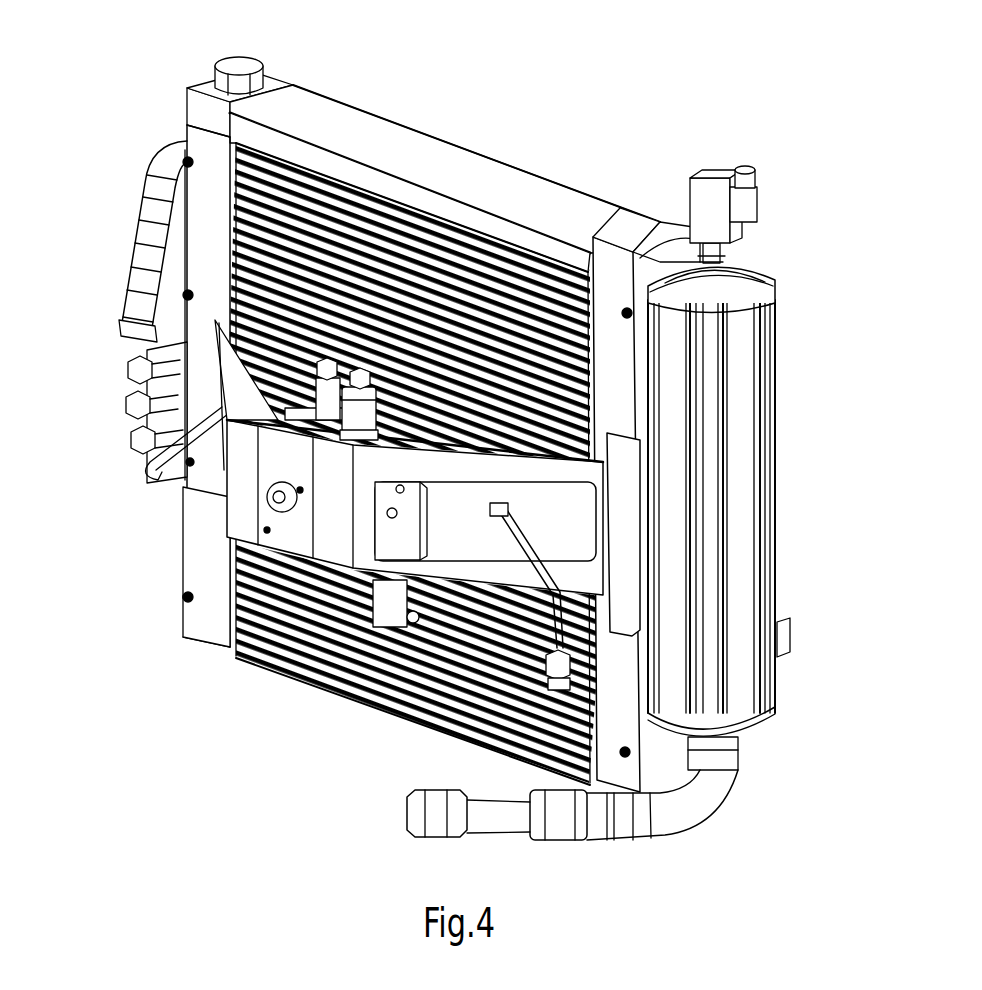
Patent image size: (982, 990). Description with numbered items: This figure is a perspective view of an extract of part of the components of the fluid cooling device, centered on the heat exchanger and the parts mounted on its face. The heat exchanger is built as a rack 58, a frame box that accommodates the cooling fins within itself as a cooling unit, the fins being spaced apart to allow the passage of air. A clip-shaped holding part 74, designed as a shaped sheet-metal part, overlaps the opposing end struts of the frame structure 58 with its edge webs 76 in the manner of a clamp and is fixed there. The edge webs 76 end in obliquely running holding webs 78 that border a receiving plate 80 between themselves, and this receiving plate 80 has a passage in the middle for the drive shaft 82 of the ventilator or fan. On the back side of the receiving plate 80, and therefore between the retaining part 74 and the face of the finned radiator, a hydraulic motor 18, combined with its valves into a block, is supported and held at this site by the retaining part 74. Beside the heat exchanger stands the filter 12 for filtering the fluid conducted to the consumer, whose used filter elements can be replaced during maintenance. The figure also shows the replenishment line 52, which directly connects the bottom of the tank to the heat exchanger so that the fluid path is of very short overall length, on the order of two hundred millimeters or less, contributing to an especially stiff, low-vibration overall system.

The filter 12 is at (742, 416).
The hydraulic motor 18 is at (360, 355).
The replenishment line 52 is at (643, 820).
The rack 58 is at (530, 195).
The clip-shaped holding part 74 is at (332, 553).
The edge webs 76 is at (200, 330).
The holding webs 78 is at (242, 378).
The receiving plate 80 is at (228, 617).
The drive shaft 82 is at (263, 498).